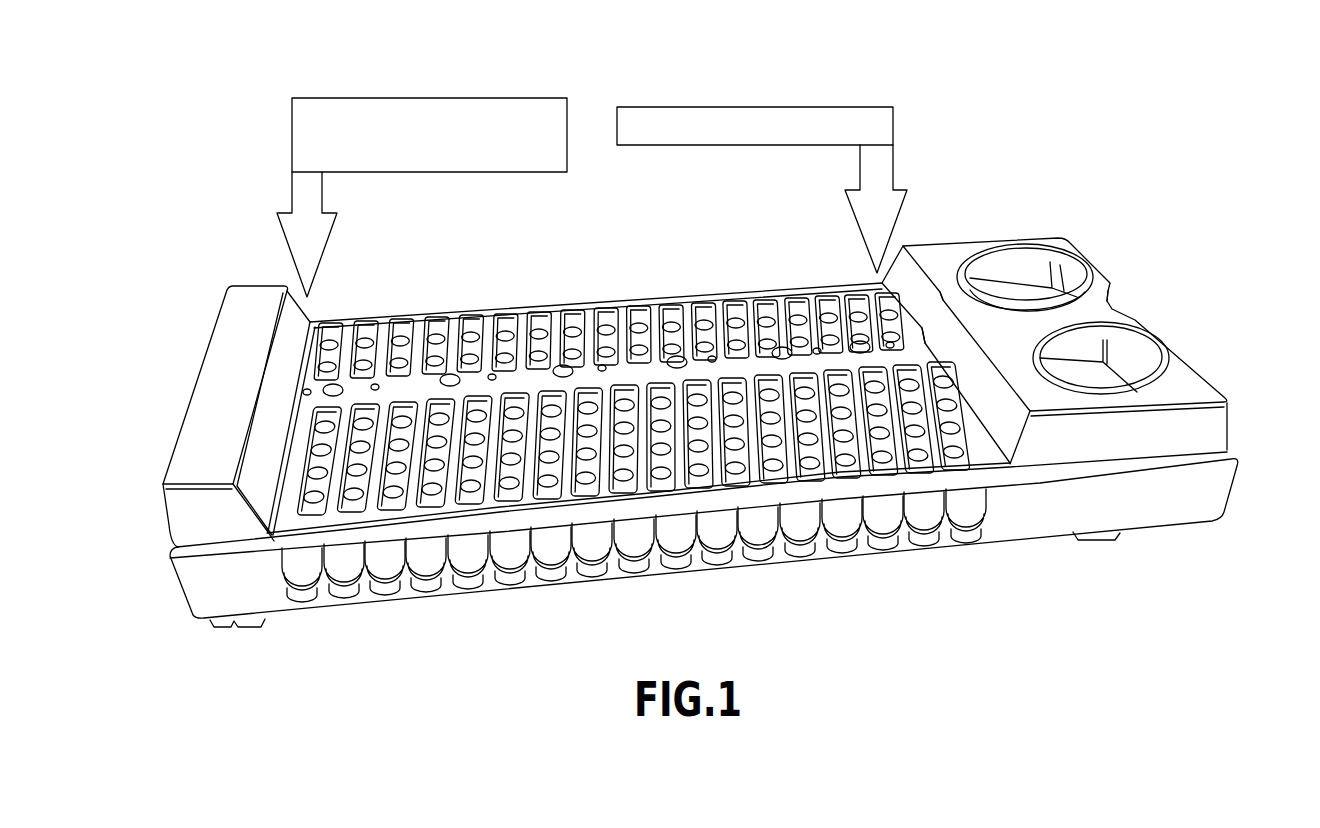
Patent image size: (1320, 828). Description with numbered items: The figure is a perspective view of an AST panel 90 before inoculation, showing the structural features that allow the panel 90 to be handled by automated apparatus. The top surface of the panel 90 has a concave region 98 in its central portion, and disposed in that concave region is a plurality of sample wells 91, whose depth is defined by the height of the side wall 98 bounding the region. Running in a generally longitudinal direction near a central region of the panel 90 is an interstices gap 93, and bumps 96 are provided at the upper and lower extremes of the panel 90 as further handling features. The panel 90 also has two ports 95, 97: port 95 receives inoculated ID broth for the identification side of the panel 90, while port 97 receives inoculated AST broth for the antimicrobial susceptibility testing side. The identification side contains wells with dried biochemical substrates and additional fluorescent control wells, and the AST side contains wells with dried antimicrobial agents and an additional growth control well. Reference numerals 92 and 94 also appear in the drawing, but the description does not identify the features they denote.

The panel 90 is at (329, 70).
The sample wells 91 is at (886, 514).
The slot strips 92 is at (817, 350).
The interstices gap 93 is at (952, 294).
The notch 94 is at (1116, 297).
The port 95 is at (989, 260).
The bumps 96 is at (202, 386).
The port 97 is at (1131, 346).
The concave region / side wall 98 is at (541, 285).